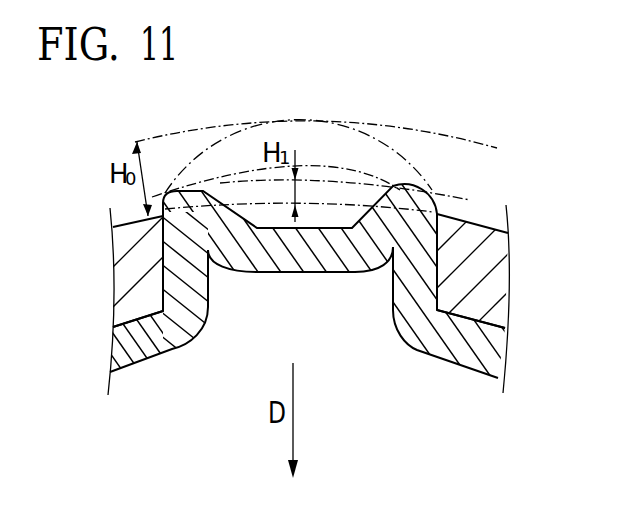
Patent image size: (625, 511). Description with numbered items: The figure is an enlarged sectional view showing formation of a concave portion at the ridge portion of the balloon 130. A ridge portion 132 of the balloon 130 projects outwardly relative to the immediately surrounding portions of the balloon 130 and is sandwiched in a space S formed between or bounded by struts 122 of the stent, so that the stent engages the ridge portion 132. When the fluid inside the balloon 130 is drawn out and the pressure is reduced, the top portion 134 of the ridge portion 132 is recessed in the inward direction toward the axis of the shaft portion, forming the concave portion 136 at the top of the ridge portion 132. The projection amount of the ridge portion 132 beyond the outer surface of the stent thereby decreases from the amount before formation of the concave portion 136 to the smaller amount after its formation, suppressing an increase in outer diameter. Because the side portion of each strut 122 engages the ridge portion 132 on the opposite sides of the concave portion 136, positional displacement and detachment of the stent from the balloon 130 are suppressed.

The strut 122 is at (122, 280).
The balloon 130 is at (412, 337).
The ridge portion 132 is at (407, 280).
The top portion 134 is at (300, 121).
The concave portion 136 is at (313, 227).
The space S is at (270, 319).